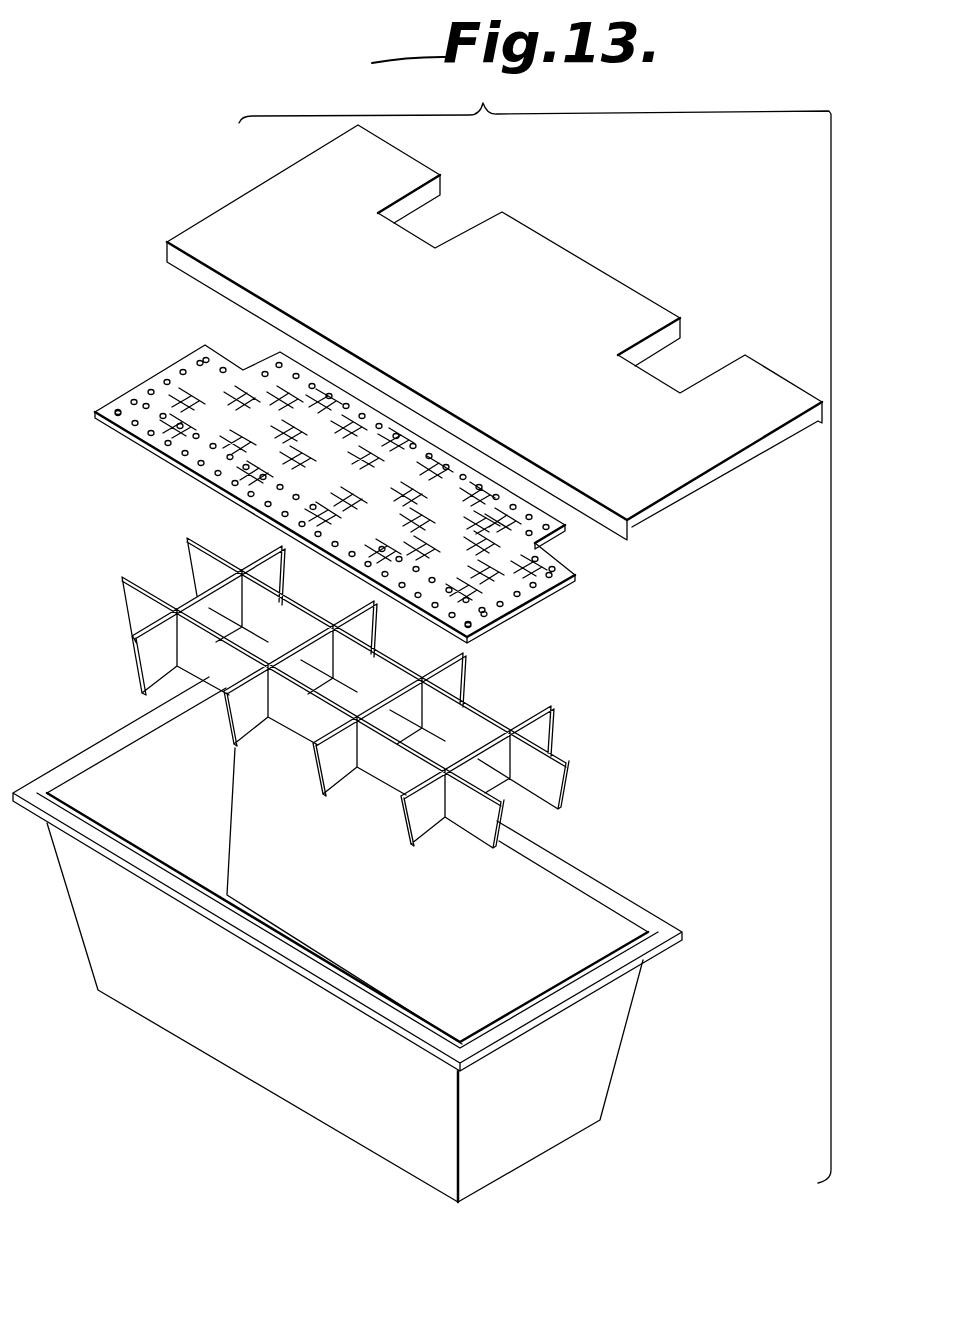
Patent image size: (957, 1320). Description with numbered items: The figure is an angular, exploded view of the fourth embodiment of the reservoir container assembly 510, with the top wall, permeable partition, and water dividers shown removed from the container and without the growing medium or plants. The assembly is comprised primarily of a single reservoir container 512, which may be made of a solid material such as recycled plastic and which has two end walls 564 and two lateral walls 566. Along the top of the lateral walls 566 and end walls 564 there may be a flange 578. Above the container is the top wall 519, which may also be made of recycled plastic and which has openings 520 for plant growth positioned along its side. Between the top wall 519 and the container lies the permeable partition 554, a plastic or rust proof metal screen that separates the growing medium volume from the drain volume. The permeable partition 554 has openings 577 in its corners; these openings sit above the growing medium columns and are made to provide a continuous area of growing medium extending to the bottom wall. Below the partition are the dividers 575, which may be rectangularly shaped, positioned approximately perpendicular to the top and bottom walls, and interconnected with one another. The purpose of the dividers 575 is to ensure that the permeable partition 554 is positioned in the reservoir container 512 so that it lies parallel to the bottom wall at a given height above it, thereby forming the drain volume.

The reservoir container assembly 510 is at (152, 196).
The top wall 519 is at (714, 478).
The openings 520 is at (683, 367).
The permeable partition 554 is at (517, 613).
The openings 577 is at (241, 345).
The dividers 575 is at (571, 787).
The flange 578 is at (675, 944).
The reservoir container 512 is at (634, 1085).
The lateral walls 566 is at (320, 1094).
The end walls 564 is at (556, 1136).